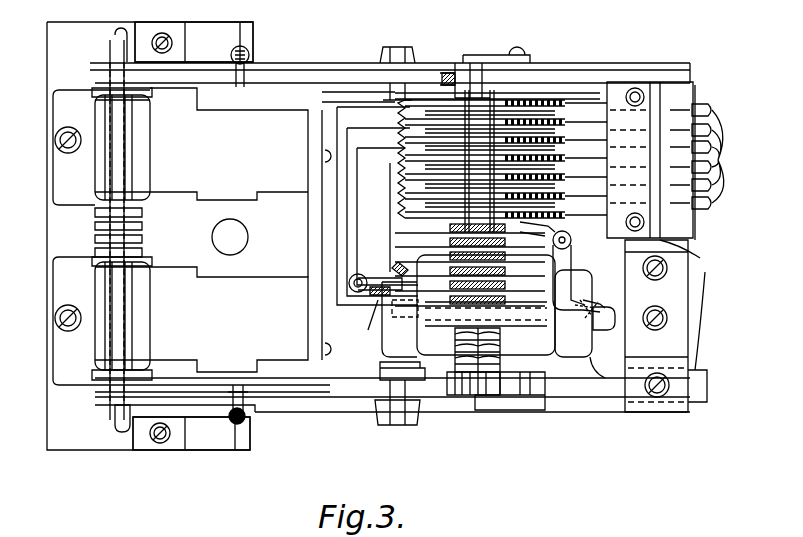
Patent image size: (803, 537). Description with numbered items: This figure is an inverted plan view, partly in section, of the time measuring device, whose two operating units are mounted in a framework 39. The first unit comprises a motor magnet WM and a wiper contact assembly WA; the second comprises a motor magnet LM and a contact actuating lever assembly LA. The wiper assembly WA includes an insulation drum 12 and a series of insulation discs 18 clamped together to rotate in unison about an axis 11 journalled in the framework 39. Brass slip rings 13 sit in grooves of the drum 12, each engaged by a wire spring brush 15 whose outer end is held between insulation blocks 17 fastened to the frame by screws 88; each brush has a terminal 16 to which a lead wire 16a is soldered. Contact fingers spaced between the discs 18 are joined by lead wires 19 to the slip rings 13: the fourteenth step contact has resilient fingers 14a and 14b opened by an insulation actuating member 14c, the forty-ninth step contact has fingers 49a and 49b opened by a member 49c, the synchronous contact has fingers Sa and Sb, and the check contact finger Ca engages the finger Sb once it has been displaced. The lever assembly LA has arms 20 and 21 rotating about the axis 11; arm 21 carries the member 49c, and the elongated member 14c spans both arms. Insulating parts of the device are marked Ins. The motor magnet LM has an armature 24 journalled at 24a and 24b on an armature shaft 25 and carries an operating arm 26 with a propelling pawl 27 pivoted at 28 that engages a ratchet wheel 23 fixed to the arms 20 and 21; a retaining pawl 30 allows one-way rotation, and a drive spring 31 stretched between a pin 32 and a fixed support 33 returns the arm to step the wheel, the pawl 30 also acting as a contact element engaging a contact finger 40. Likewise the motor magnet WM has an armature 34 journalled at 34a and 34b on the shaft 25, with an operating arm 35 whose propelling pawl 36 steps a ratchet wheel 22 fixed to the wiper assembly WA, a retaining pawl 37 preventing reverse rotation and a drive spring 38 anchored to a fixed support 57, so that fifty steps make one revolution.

The axis 11 is at (512, 53).
The insulation drum 12 is at (575, 138).
The slip rings 13 is at (405, 128).
The contact finger 14a is at (588, 305).
The contact finger 14b is at (596, 328).
The insulation contact actuating member 14c is at (610, 312).
The wire spring brush 15 is at (585, 190).
The terminal 16 is at (650, 160).
The lead wire 16a is at (708, 156).
The insulation block 17 is at (700, 85).
The insulation discs 18 is at (540, 300).
The lead wires 19 is at (390, 232).
The radially extending arm 20 is at (455, 346).
The radially extending arm 21 is at (603, 365).
The ratchet wheel 22 is at (462, 68).
The ratchet wheel 23 is at (465, 392).
The armature 24 is at (100, 345).
The journal 24a is at (95, 265).
The journal 24b is at (95, 386).
The armature shaft 25 is at (115, 418).
The operating arm 26 is at (325, 385).
The propelling pawl 27 is at (385, 392).
The pivot 28 is at (380, 366).
The retaining pawl 30 is at (500, 396).
The drive spring 31 is at (245, 420).
The pin 32 is at (230, 394).
The fixed support 33 is at (232, 420).
The armature 34 is at (100, 160).
The journal 34a is at (95, 95).
The journal 34b is at (95, 212).
The operating arm 35 is at (350, 92).
The propelling pawl 36 is at (388, 68).
The retaining pawl 37 is at (592, 75).
The drive spring 38 is at (247, 56).
The framework 39 is at (580, 398).
The contact finger 40 is at (708, 385).
The contact finger 49a is at (552, 222).
The contact finger 49b is at (556, 236).
The insulation contact actuating member 49c is at (573, 252).
The fixed support 57 is at (203, 60).
The screws 88 is at (645, 97).
The motor magnet WM is at (208, 224).
The motor magnet LM is at (201, 319).
The wiper contact assembly WA is at (365, 154).
The contact actuating lever assembly LA is at (486, 305).
The contact finger Sb is at (375, 270).
The contact finger Sa is at (400, 319).
The contact finger Ca is at (400, 260).
The insulation Ins is at (536, 305).